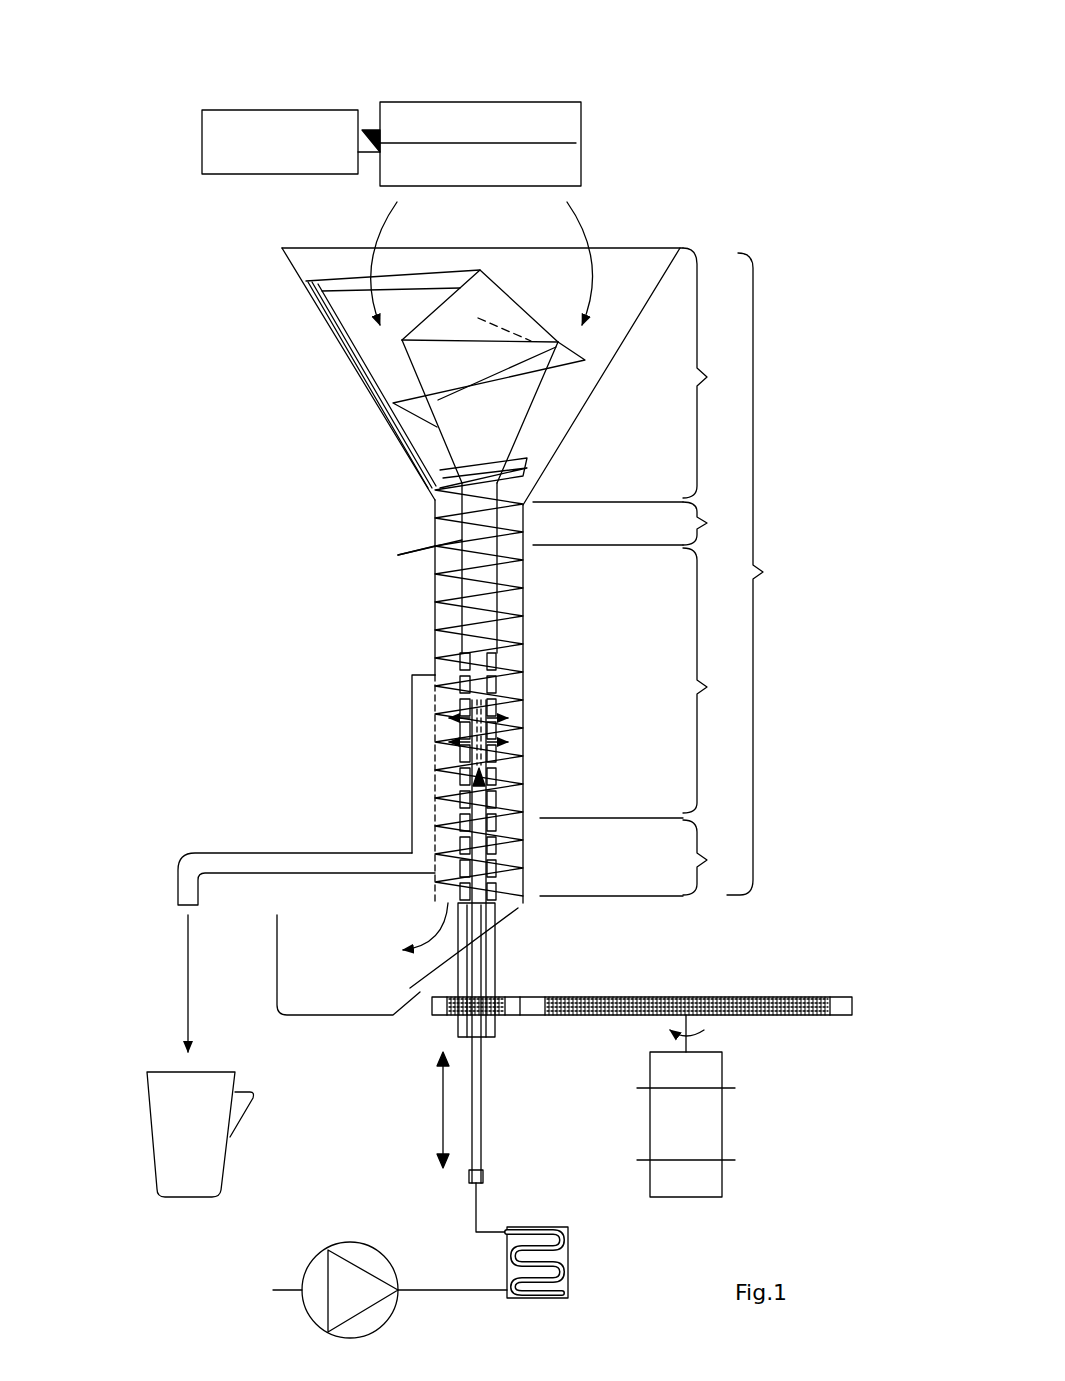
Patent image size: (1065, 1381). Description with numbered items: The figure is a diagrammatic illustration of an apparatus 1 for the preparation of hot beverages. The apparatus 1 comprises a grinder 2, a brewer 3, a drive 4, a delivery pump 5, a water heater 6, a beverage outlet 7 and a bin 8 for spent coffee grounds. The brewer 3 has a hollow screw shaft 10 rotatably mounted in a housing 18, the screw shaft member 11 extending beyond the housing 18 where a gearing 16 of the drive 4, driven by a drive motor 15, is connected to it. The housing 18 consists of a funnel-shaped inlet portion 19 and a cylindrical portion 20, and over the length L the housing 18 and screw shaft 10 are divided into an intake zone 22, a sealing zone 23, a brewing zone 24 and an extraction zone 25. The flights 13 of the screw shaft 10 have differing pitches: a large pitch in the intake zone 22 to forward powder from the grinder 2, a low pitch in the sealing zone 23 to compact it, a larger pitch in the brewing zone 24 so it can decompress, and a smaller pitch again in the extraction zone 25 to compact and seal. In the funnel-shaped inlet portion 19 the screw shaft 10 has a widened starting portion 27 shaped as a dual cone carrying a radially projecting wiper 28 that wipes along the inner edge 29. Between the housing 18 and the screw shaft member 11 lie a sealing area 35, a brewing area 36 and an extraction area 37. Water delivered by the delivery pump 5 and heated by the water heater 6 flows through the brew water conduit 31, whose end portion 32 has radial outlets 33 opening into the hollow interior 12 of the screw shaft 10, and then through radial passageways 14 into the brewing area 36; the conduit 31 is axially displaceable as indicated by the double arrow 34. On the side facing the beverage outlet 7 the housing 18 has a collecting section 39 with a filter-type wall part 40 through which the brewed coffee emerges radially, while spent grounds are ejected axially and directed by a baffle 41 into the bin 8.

The apparatus 1 is at (205, 613).
The grinder 2 is at (522, 80).
The brewer 3 is at (450, 349).
The drive 4 is at (642, 966).
The delivery pump 5 is at (313, 1312).
The water heater 6 is at (530, 1300).
The beverage outlet 7 is at (185, 885).
The bin 8 is at (352, 1013).
The screw shaft 10 is at (483, 630).
The screw shaft member 11 is at (495, 954).
The hollow interior 12 is at (480, 665).
The flights 13 is at (417, 555).
The radial passageways 14 is at (503, 765).
The drive motor 15 is at (712, 1122).
The gearing 16 is at (622, 997).
The housing 18 is at (425, 505).
The funnel-shaped inlet portion 19 is at (335, 367).
The cylindrical portion 20 is at (413, 648).
The intake zone 22 is at (711, 373).
The sealing zone 23 is at (711, 523).
The brewing zone 24 is at (711, 680).
The extraction zone 25 is at (711, 857).
The widened starting portion 27 is at (533, 327).
The wiper 28 is at (340, 290).
The inner edge 29 is at (601, 338).
The brew water conduit 31 is at (482, 1113).
The end portion 32 is at (460, 702).
The radial outlets 33 is at (460, 727).
The double arrow 34 is at (440, 1105).
The sealing area 35 is at (513, 509).
The brewing area 36 is at (513, 722).
The extraction area 37 is at (510, 858).
The collecting section 39 is at (420, 770).
The filter-type wall part 40 is at (438, 815).
The baffle 41 is at (512, 915).
The length L is at (759, 574).